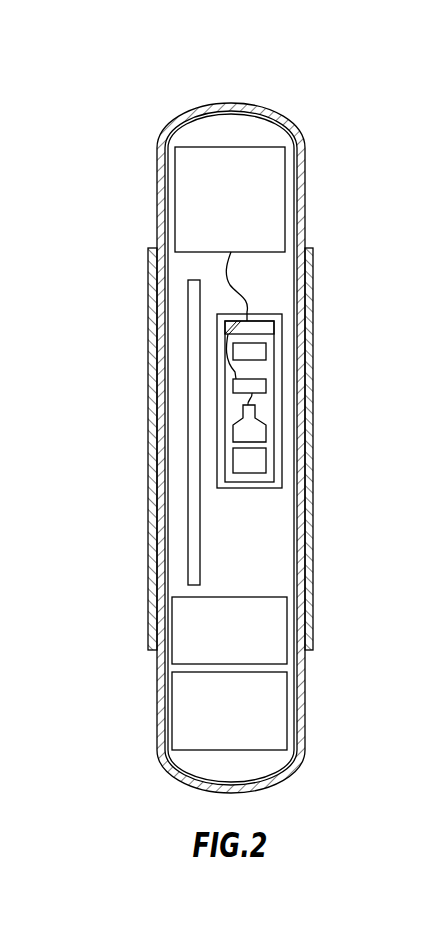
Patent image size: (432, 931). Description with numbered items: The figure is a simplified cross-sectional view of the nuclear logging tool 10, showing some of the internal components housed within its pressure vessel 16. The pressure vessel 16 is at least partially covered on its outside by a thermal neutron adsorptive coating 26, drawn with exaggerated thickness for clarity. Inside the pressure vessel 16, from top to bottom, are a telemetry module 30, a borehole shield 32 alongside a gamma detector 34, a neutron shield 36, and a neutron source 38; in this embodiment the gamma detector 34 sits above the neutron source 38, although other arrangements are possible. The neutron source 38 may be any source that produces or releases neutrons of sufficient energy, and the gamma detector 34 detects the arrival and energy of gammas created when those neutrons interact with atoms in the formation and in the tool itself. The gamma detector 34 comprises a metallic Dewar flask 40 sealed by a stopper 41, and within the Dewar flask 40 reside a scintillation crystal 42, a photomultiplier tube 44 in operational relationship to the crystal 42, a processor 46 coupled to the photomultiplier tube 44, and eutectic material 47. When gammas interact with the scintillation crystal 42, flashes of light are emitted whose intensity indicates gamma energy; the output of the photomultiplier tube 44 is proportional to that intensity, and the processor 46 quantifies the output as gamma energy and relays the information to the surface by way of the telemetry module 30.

The nuclear logging tool 10 is at (315, 104).
The pressure vessel 16 is at (302, 145).
The thermal neutron adsorptive coating 26 is at (311, 520).
The telemetry module 30 is at (285, 185).
The borehole shield 32 is at (188, 321).
The gamma detector 34 is at (207, 398).
The neutron shield 36 is at (287, 637).
The neutron source 38 is at (287, 710).
The metallic Dewar flask 40 is at (310, 370).
The stopper 41 is at (262, 323).
The scintillation crystal 42 is at (258, 462).
The photomultiplier tube 44 is at (255, 428).
The processor 46 is at (261, 388).
The eutectic material 47 is at (258, 353).